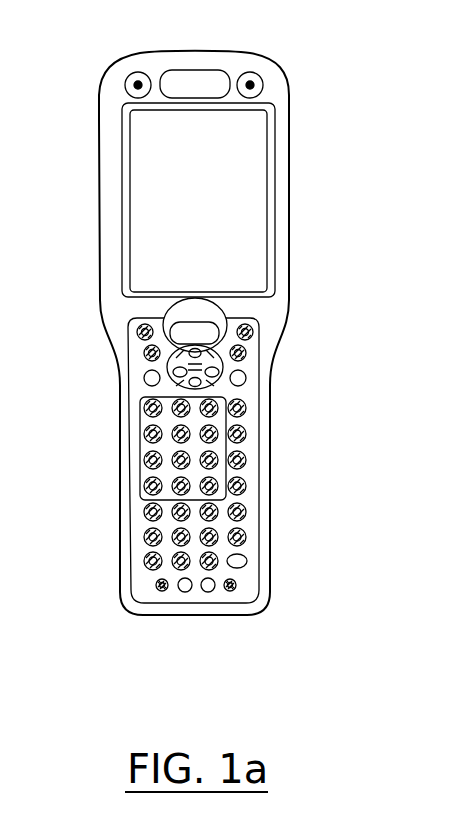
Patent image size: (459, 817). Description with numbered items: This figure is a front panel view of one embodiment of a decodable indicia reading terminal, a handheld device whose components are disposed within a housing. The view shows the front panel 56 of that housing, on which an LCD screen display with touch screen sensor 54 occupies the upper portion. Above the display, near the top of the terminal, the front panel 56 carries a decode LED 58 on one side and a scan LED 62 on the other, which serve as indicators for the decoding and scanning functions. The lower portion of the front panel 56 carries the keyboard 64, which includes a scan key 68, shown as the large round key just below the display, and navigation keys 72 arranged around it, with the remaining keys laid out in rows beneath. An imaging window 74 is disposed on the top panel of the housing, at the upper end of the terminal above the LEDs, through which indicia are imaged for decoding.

The imaging window 74 is at (192, 50).
The front panel 56 is at (99, 138).
The decode LED 58 is at (124, 85).
The scan LED 62 is at (263, 84).
The LCD screen display with touch screen sensor 54 is at (140, 202).
The scan key 68 is at (164, 323).
The navigation keys 72 is at (146, 369).
The keyboard 64 is at (150, 447).